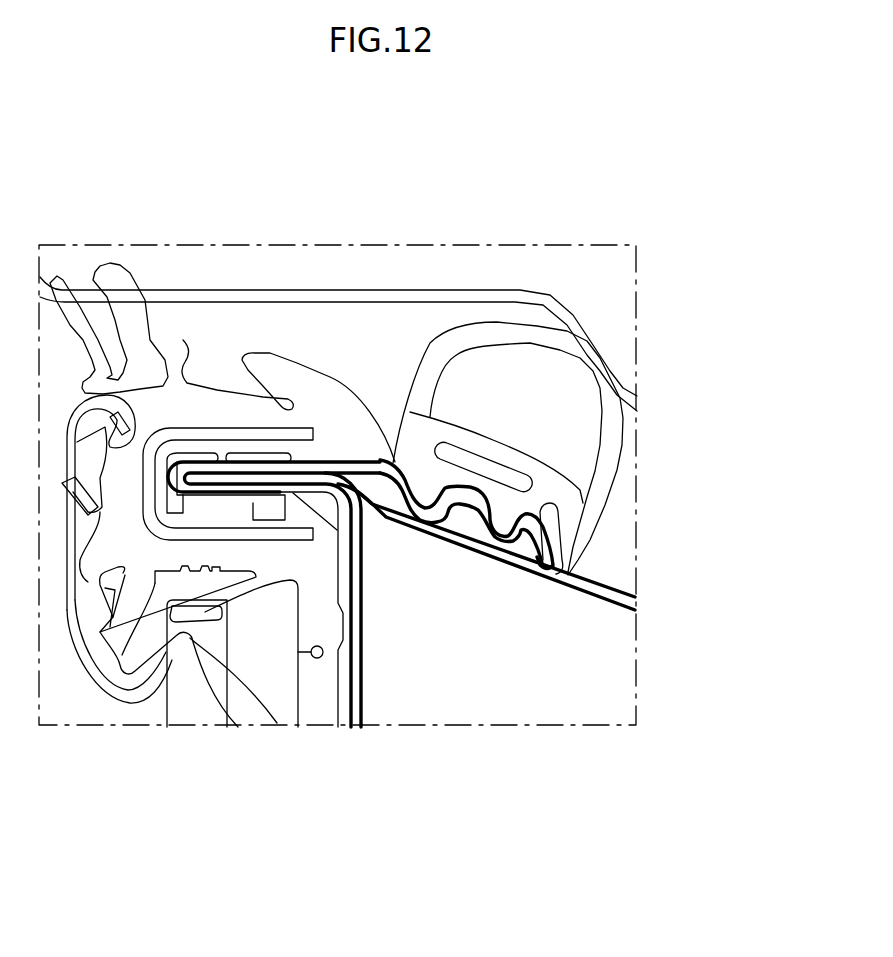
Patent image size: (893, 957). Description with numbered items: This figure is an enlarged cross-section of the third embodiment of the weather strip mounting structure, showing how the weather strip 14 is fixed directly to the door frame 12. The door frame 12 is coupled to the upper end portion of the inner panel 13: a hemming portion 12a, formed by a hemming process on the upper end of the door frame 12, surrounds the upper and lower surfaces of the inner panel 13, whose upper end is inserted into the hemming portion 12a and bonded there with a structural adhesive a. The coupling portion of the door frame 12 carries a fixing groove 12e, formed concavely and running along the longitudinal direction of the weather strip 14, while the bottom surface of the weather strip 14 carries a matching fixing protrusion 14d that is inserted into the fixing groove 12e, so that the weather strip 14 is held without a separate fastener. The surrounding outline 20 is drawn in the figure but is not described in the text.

The molding 20 is at (314, 293).
The weather strip 14 is at (608, 445).
The fixing protrusion 14d is at (503, 528).
The fixing groove 12e is at (427, 512).
The hemming portion 12a is at (200, 487).
The structural adhesive a is at (218, 473).
The door frame 12 is at (360, 667).
The inner panel 13 is at (570, 583).